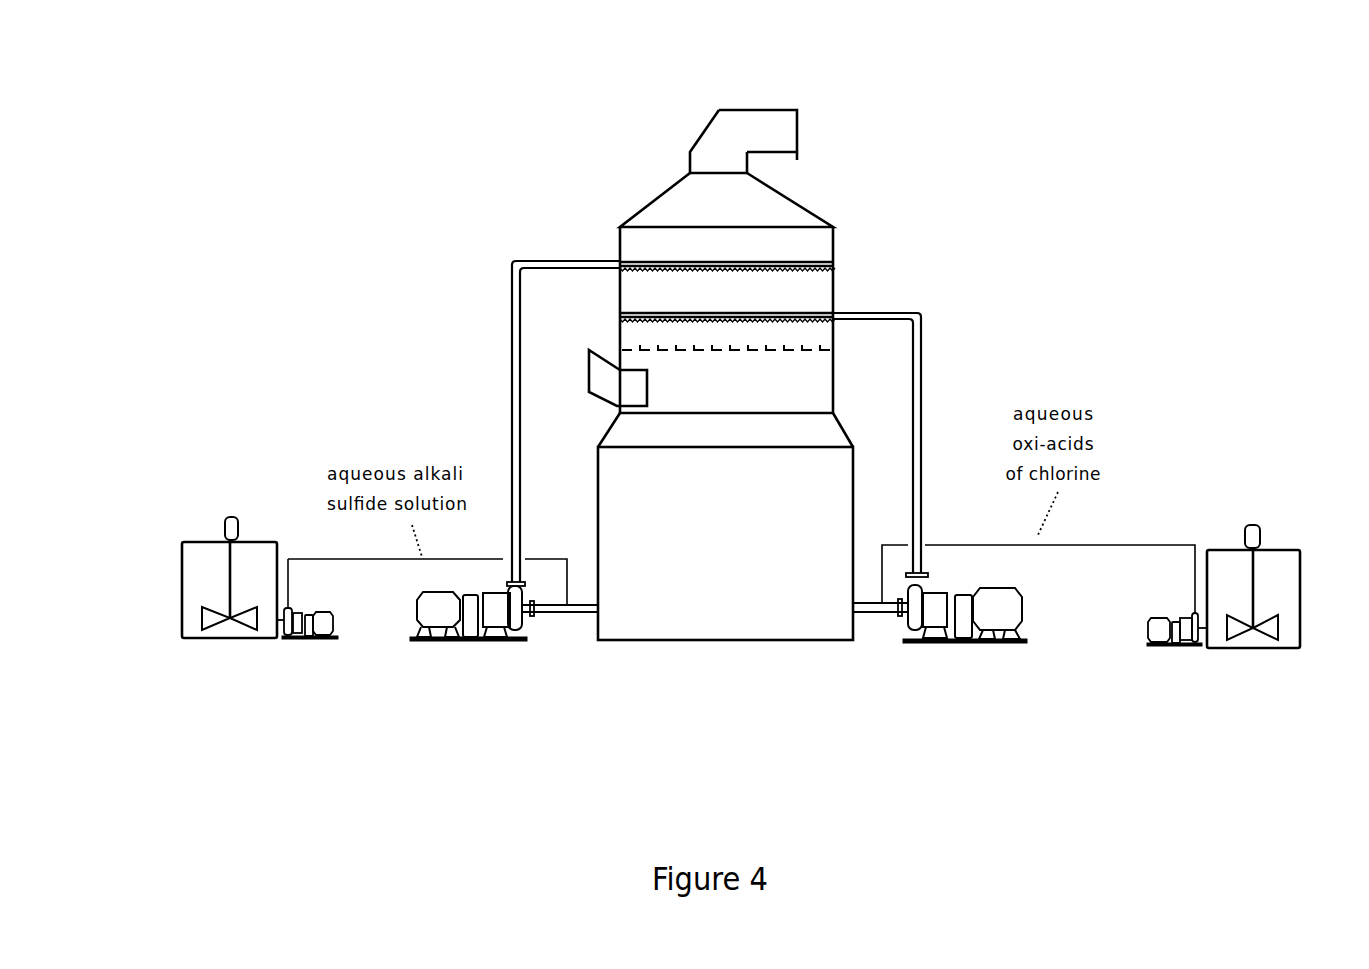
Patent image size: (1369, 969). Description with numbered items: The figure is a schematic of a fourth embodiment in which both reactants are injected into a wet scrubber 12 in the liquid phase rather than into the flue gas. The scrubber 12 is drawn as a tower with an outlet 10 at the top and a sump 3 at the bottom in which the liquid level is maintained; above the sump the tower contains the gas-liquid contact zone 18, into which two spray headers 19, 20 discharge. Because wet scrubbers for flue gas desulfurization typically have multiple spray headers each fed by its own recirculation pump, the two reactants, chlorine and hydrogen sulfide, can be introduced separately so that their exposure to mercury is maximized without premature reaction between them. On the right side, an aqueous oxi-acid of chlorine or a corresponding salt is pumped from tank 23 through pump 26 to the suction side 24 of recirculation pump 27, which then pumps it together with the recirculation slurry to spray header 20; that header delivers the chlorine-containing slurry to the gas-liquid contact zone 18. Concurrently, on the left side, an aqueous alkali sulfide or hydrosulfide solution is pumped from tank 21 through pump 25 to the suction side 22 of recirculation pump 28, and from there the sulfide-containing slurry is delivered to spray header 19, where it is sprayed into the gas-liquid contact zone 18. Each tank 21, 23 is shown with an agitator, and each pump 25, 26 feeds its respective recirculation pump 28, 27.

The sump 3 is at (725, 543).
The exhaust gas outlet stack 10 is at (762, 127).
The wet scrubber 12 is at (705, 260).
The gas-liquid contact zone 18 is at (726, 335).
The spray header 19 is at (558, 260).
The spray header 20 is at (884, 313).
The tank 21 is at (182, 592).
The suction side 22 is at (561, 617).
The tank 23 is at (1293, 603).
The suction side 24 is at (887, 617).
The pump 25 is at (310, 645).
The pump 26 is at (1168, 650).
The recirculation pump 27 is at (975, 647).
The recirculation pump 28 is at (469, 643).